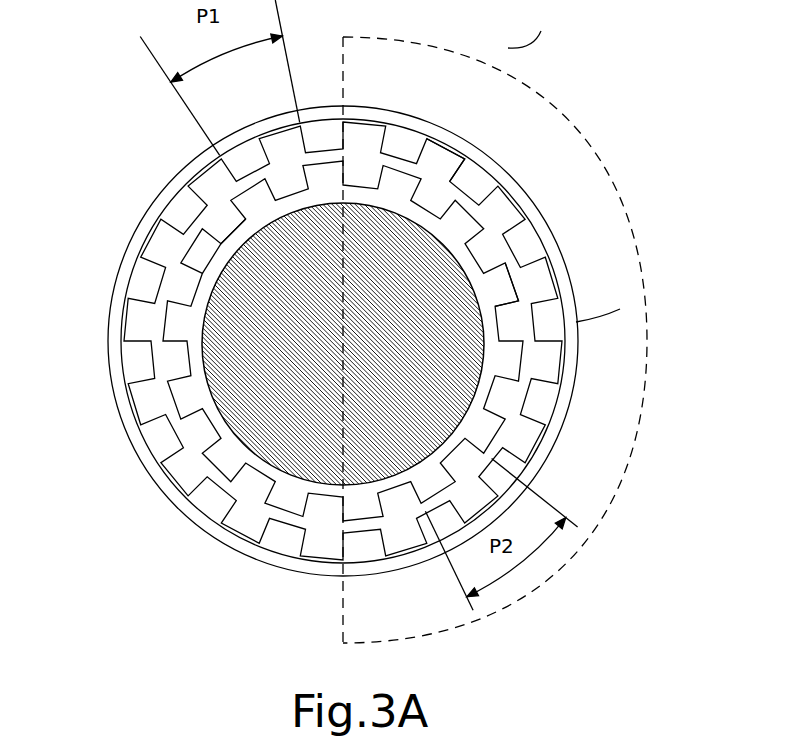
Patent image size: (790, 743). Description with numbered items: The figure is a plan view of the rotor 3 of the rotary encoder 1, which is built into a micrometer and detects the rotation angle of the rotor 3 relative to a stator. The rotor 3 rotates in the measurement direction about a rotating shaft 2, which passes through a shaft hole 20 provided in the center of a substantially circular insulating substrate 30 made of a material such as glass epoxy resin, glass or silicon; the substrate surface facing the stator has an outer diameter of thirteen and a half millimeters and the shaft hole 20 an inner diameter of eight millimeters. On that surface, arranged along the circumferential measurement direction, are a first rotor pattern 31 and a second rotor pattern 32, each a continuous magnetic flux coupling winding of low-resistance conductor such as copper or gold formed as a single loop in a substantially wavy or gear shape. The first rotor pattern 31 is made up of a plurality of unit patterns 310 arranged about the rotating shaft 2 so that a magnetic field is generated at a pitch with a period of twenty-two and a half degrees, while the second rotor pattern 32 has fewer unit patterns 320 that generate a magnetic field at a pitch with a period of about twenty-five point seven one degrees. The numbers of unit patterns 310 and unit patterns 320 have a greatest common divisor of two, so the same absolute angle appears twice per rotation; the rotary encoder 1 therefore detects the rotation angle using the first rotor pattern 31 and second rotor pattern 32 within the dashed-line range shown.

The rotary encoder 1 is at (606, 108).
The rotating shaft 2 is at (264, 344).
The shaft hole 20 is at (200, 274).
The rotor 3 is at (403, 320).
The insulating substrate 30 is at (578, 410).
The first rotor pattern 31 is at (400, 182).
The unit pattern 310 is at (374, 160).
The second rotor pattern 32 is at (442, 187).
The unit pattern 320 is at (528, 284).